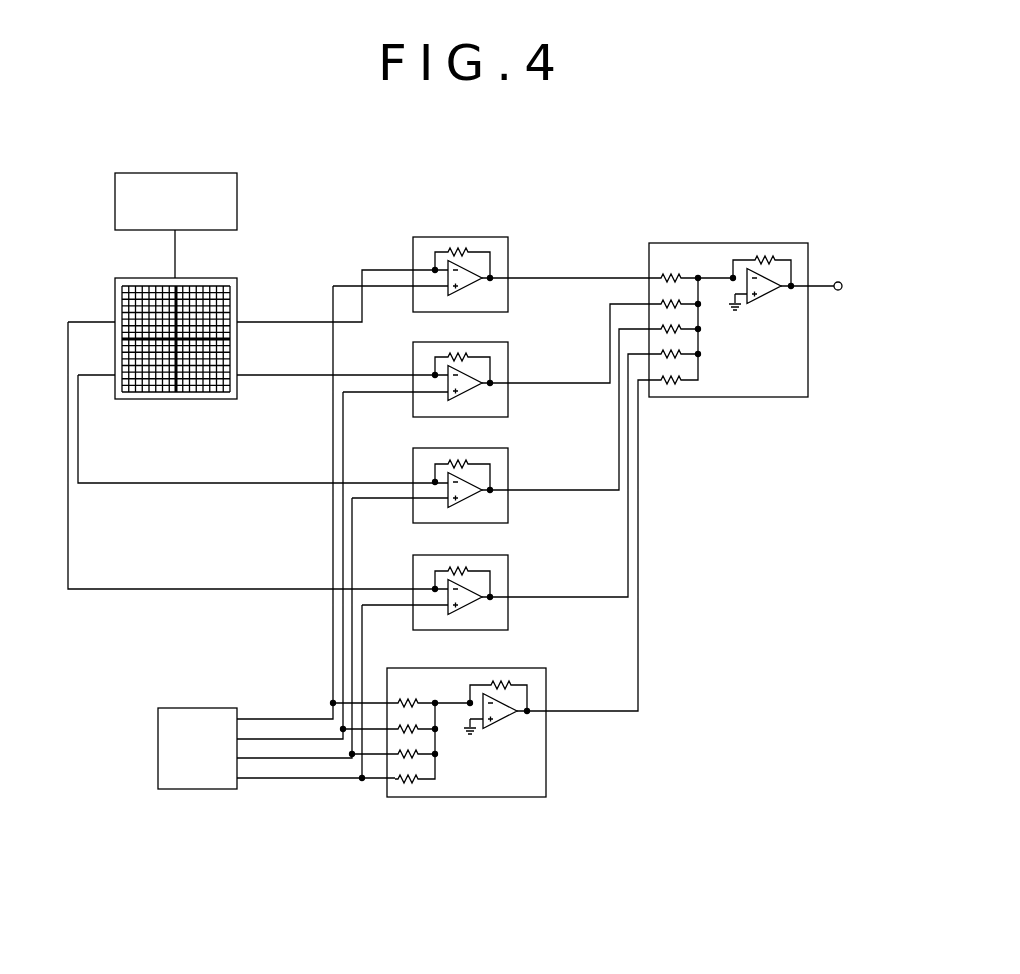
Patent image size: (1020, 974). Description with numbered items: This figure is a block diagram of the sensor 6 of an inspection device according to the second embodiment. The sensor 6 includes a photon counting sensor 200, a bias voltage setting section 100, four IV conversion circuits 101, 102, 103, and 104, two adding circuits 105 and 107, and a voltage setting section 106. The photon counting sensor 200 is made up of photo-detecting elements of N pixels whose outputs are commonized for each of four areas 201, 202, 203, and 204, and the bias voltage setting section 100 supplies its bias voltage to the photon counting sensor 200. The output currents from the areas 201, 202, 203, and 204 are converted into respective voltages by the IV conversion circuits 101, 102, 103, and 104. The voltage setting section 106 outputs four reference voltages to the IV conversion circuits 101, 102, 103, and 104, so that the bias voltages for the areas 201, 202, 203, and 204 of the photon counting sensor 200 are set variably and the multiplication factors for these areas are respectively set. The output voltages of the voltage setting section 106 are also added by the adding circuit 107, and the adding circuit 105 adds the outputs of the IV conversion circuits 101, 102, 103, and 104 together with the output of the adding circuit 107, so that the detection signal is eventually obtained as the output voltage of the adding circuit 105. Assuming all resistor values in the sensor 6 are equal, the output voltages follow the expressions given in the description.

The sensor 6 is at (607, 160).
The bias voltage setting section 100 is at (237, 197).
The IV conversion circuit 101 is at (508, 254).
The IV conversion circuit 102 is at (508, 360).
The IV conversion circuit 103 is at (508, 467).
The IV conversion circuit 104 is at (508, 574).
The adding circuit 105 is at (805, 243).
The voltage setting section 106 is at (183, 707).
The adding circuit 107 is at (546, 766).
The photon counting sensor 200 is at (176, 336).
The area 201 is at (228, 296).
The area 202 is at (200, 399).
The area 203 is at (142, 400).
The area 204 is at (122, 296).